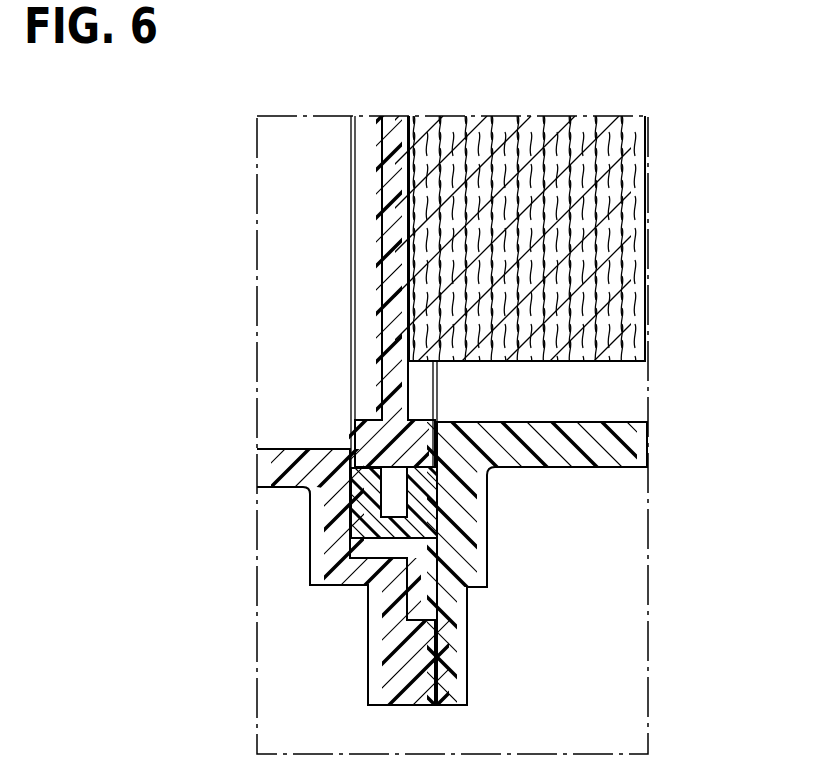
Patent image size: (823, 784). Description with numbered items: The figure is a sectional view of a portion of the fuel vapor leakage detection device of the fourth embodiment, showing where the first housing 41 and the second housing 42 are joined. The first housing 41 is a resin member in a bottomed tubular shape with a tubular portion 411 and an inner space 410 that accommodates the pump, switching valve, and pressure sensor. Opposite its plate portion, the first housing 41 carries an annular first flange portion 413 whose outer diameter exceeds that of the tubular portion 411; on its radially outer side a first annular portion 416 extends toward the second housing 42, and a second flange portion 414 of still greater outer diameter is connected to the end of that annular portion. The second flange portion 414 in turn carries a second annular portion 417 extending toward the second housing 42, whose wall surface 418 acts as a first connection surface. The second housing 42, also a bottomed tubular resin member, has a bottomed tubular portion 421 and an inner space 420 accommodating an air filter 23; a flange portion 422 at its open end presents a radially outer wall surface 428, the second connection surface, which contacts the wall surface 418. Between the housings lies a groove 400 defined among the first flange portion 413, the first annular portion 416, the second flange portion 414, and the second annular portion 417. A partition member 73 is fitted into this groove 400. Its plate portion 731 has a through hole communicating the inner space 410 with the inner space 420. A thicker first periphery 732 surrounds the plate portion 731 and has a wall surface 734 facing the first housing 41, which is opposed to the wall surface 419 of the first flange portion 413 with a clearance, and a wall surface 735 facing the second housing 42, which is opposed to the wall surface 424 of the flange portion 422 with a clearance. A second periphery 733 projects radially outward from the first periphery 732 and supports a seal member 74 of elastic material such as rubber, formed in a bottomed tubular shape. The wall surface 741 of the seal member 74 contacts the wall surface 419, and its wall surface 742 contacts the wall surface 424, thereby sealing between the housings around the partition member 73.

The air filter 23 is at (622, 182).
The first housing 41 is at (318, 440).
The second housing 42 is at (632, 418).
The partition member 73 is at (378, 127).
The seal member 74 is at (352, 524).
The groove 400 is at (355, 558).
The inner space 410 is at (275, 325).
The tubular portion 411 is at (292, 463).
The first flange portion 413 is at (312, 570).
The second flange portion 414 is at (388, 598).
The first annular portion 416 is at (368, 583).
The second annular portion 417 is at (413, 663).
The wall surface 418 is at (443, 706).
The wall surface 419 is at (350, 548).
The inner space 420 is at (587, 405).
The bottomed tubular portion 421 is at (630, 446).
The flange portion 422 is at (478, 582).
The wall surface 424 is at (425, 565).
The wall surface 428 is at (430, 650).
The plate portion 731 is at (396, 228).
The first periphery 732 is at (337, 424).
The second periphery 733 is at (352, 472).
The wall surface 734 is at (305, 450).
The wall surface 735 is at (437, 452).
The wall surface 741 is at (355, 506).
The wall surface 742 is at (440, 492).